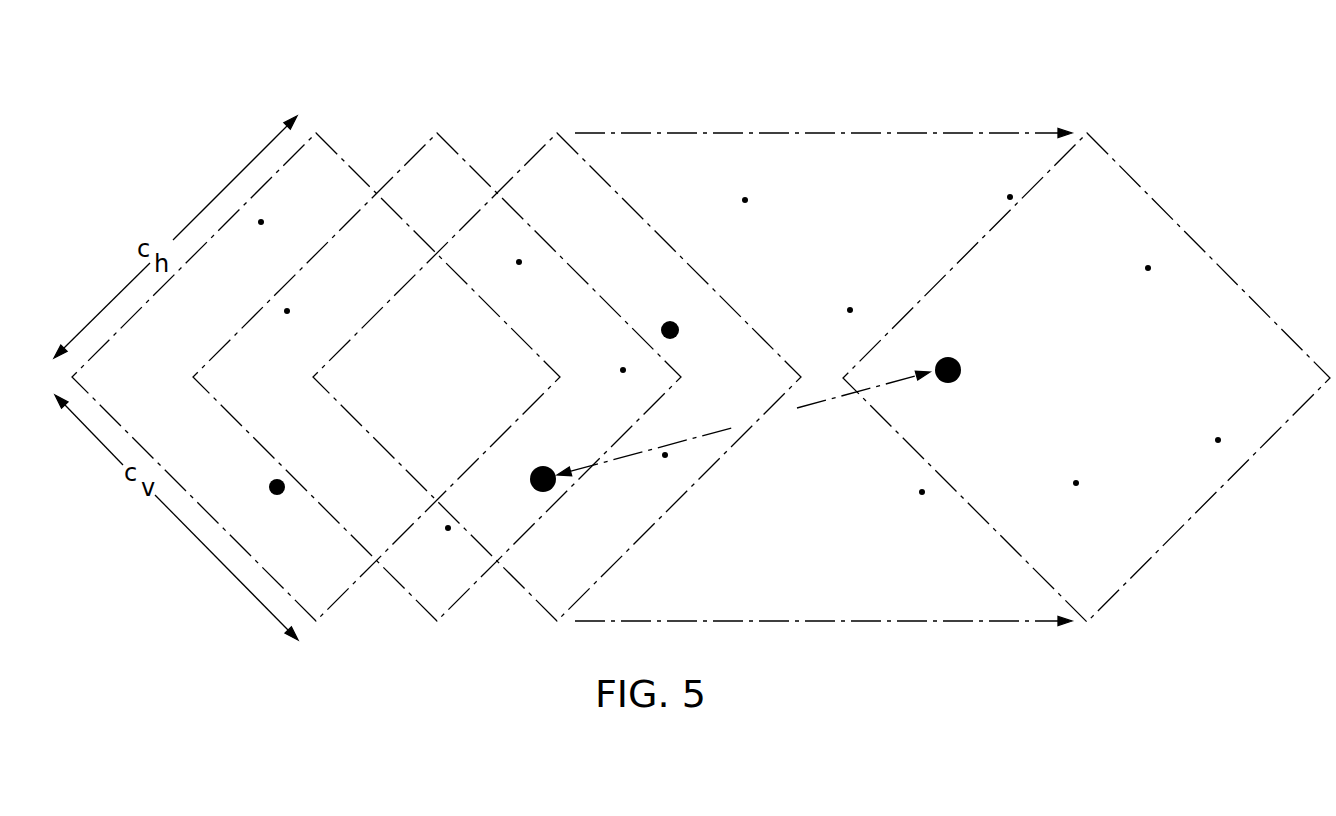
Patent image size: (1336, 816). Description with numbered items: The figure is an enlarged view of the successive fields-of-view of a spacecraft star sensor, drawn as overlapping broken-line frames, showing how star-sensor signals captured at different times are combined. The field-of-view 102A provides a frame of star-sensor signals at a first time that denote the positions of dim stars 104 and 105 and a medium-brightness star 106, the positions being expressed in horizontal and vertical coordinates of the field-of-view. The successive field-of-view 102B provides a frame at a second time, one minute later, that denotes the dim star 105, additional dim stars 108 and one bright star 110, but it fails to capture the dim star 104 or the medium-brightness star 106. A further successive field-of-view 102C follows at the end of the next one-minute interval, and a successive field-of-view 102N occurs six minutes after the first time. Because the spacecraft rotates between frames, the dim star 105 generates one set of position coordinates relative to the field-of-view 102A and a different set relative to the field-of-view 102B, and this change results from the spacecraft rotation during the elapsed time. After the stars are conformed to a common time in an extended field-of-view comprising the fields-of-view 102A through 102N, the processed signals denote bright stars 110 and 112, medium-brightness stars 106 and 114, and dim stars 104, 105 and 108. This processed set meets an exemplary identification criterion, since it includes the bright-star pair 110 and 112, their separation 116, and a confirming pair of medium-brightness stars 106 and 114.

The field-of-view 102A is at (275, 144).
The successive field-of-view 102B is at (398, 146).
The successive field-of-view 102C is at (521, 146).
The successive field-of-view 102N is at (1124, 146).
The dim star 104 is at (261, 226).
The dim star 105 is at (287, 315).
The medium-brightness star 106 is at (273, 495).
The dim stars 108 is at (519, 266).
The bright star 110 is at (545, 493).
The bright star 112 is at (949, 384).
The medium-brightness star 114 is at (670, 340).
The separation 116 is at (743, 423).